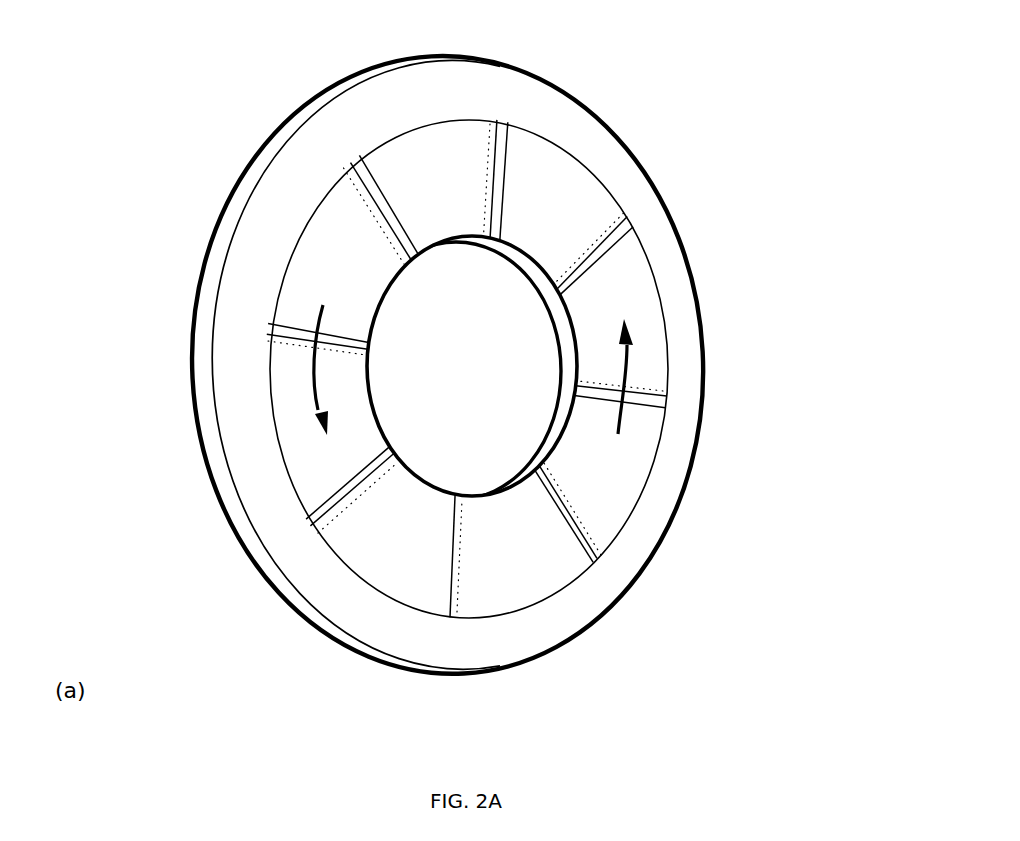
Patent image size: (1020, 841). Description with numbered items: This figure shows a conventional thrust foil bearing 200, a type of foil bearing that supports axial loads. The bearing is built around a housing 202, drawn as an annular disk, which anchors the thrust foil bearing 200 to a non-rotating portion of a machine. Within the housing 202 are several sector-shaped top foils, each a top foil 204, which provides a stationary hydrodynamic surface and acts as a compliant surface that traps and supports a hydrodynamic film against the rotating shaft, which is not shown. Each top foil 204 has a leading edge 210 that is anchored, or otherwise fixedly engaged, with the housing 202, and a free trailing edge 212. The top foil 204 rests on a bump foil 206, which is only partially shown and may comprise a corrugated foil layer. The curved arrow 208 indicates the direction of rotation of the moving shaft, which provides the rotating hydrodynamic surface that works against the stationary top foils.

The thrust foil bearing 200 is at (819, 31).
The housing 202 is at (683, 247).
The top foil 204 is at (638, 463).
The bump foil 206 is at (394, 609).
The arrow 208 is at (313, 385).
The leading edge 210 is at (580, 519).
The trailing edge 212 is at (638, 407).